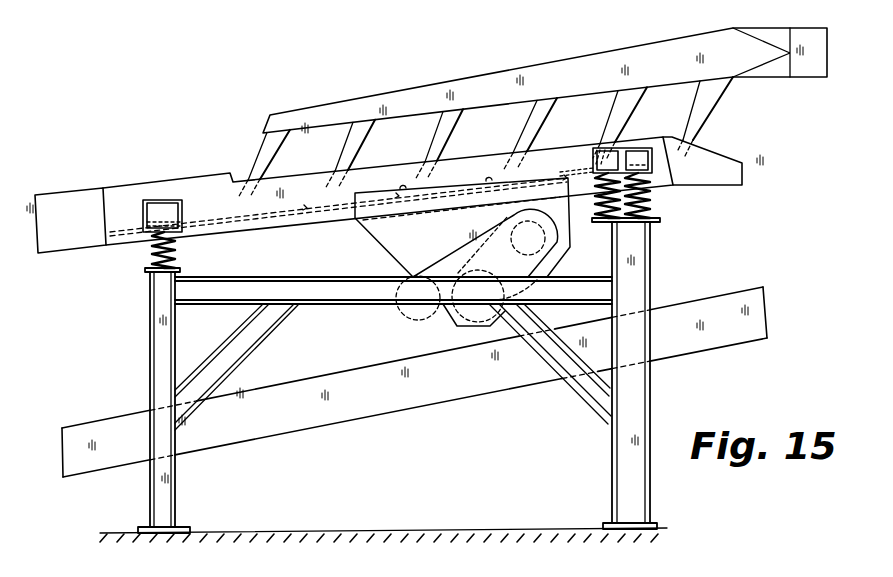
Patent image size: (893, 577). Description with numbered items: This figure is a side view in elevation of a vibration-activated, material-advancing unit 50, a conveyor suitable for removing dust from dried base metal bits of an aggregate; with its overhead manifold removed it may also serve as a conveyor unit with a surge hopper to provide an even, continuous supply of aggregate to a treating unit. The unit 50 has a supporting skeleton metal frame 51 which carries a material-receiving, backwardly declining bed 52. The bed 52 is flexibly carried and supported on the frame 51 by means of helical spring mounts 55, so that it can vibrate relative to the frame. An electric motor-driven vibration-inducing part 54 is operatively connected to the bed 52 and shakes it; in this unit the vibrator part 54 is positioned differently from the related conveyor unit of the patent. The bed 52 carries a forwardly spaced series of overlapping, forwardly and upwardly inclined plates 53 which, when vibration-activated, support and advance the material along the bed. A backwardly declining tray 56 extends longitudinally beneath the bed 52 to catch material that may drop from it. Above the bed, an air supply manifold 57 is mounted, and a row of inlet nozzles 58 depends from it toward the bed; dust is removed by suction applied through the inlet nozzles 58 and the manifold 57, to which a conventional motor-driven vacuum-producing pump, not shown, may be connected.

The vibration-activated, material-advancing unit 50 is at (611, 457).
The supporting skeleton metal frame 51 is at (651, 288).
The backwardly declining bed 52 is at (84, 250).
The inclined plates 53 is at (262, 214).
The electric motor-driven vibration-inducing part 54 is at (389, 255).
The helical spring mounts 55 is at (178, 248).
The backwardly declining tray 56 is at (363, 368).
The manifold 57 is at (466, 77).
The inlet nozzles 58 is at (262, 147).